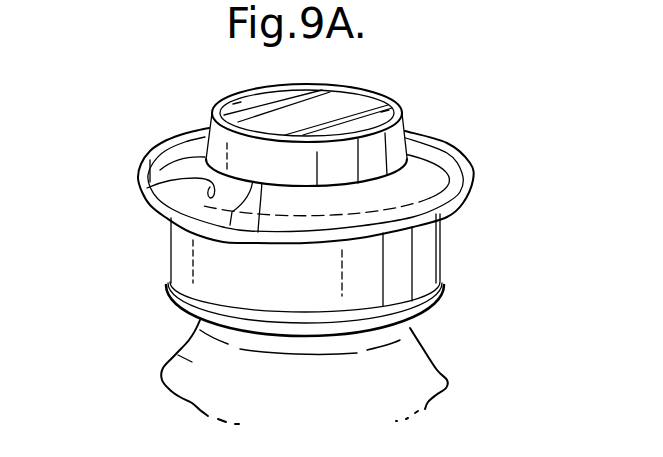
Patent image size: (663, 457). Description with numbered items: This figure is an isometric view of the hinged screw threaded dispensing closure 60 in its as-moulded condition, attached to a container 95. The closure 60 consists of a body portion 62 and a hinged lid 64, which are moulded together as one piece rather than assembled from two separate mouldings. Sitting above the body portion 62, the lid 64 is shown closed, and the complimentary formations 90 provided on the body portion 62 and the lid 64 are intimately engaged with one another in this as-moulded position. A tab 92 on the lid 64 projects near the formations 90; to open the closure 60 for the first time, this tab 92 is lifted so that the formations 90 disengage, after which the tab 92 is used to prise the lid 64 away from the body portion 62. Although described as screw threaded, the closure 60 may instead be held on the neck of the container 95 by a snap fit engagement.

The screw threaded dispensing closure 60 is at (459, 134).
The body portion 62 is at (440, 250).
The hinged lid 64 is at (358, 100).
The complimentary formations 90 is at (190, 188).
The tab 92 is at (230, 223).
The container 95 is at (193, 363).